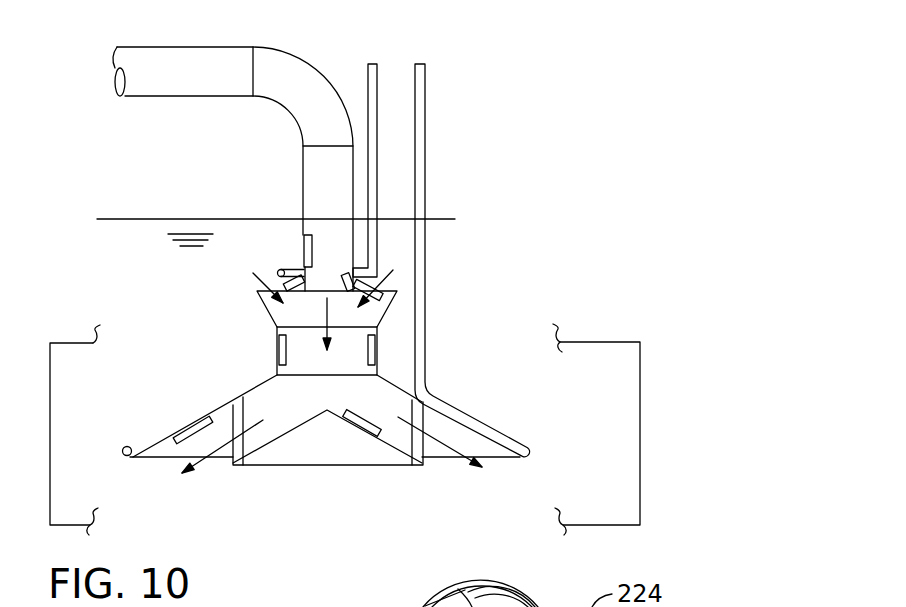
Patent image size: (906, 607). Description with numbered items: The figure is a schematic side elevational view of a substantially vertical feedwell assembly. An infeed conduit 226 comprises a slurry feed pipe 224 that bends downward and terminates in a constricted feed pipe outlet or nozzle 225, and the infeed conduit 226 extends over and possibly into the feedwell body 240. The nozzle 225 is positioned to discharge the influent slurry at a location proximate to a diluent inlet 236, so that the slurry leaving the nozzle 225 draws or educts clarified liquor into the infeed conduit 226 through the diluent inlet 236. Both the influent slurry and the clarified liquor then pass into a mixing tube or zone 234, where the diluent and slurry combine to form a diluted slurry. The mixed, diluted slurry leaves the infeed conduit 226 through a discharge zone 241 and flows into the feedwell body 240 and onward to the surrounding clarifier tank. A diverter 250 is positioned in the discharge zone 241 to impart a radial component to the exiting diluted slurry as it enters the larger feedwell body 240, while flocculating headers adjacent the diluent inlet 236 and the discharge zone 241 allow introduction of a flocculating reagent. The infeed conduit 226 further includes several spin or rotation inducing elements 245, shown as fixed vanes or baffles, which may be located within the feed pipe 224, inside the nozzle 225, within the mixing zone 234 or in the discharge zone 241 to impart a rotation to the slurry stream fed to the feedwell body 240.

The slurry feed pipe 224 is at (318, 67).
The feed pipe outlet or nozzle 225 is at (272, 315).
The infeed conduit 226 is at (200, 297).
The mixing tube or zone 234 is at (425, 355).
The diluent inlet 236 is at (400, 277).
The feedwell body 240 is at (640, 418).
The discharge zone 241 is at (158, 467).
The spin or rotation inducing element 245 is at (313, 250).
The diverter 250 is at (263, 467).